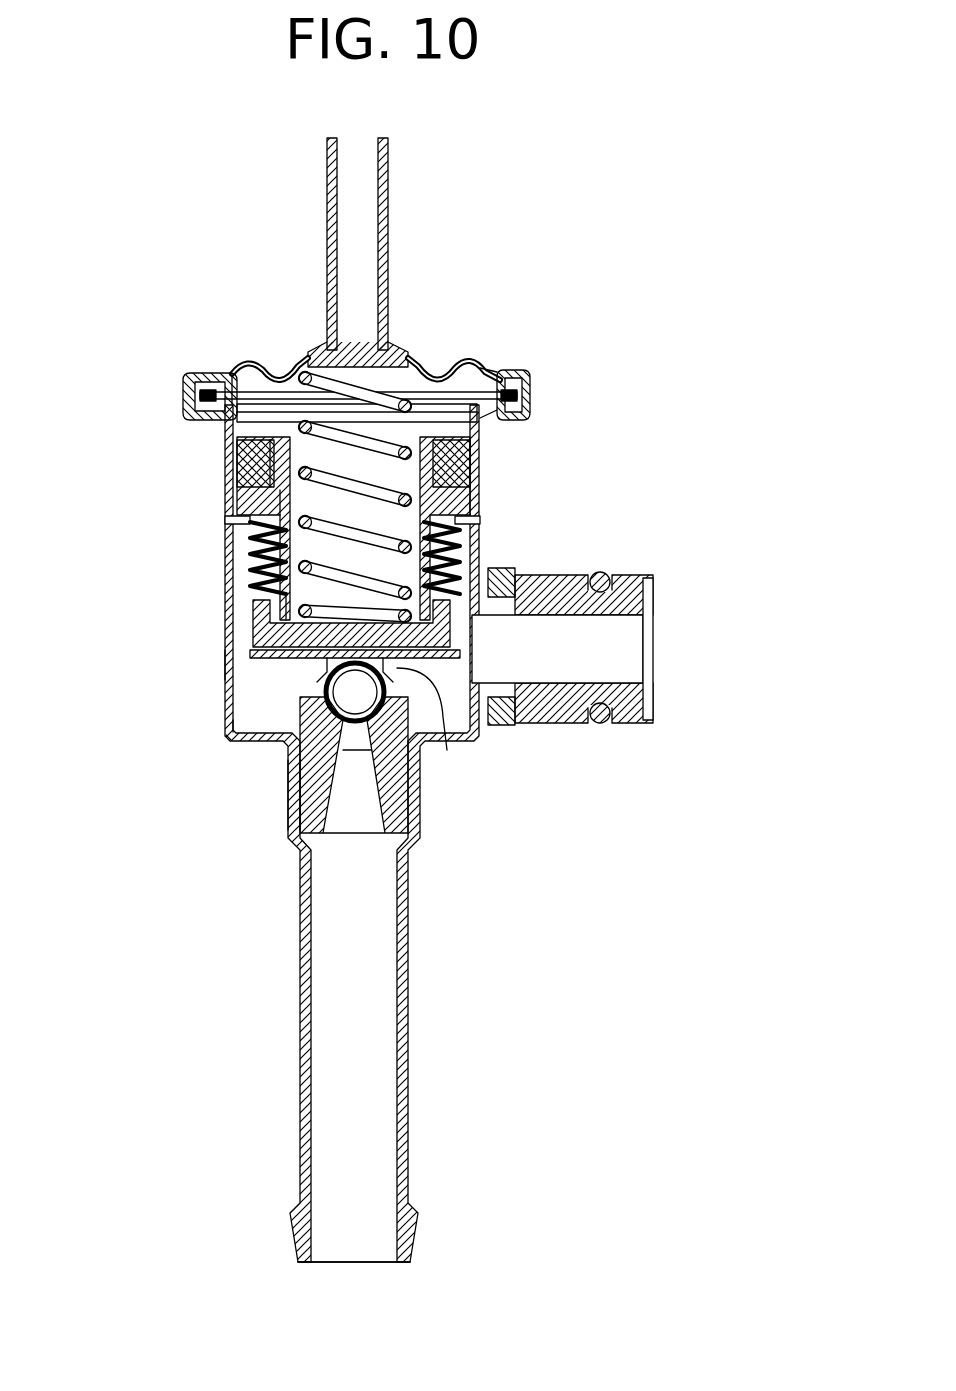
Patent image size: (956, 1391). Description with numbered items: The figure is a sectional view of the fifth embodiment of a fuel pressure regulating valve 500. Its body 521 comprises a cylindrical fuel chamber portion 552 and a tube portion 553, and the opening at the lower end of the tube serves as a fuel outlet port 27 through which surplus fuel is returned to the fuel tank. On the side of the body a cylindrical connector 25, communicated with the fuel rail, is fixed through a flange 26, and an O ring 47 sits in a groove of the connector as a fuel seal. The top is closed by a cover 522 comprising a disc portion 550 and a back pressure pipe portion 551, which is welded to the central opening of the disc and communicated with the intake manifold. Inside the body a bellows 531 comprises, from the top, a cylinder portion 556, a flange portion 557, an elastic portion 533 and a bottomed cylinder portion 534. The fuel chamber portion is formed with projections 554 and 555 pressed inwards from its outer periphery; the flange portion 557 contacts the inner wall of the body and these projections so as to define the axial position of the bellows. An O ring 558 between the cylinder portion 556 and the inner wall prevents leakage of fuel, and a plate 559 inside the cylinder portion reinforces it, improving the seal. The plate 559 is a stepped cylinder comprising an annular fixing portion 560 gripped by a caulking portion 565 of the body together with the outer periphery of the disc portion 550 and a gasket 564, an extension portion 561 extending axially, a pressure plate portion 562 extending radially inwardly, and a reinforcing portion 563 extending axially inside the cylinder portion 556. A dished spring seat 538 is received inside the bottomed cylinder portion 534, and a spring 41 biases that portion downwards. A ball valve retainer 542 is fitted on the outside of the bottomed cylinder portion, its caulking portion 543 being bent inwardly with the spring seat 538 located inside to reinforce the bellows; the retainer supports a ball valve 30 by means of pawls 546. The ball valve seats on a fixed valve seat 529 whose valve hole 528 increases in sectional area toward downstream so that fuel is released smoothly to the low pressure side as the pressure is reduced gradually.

The fuel pressure regulating valve 500 is at (185, 220).
The back pressure pipe portion 551 is at (390, 194).
The cover 522 is at (445, 335).
The gasket 564 is at (235, 366).
The spring 41 is at (417, 390).
The caulking portion 565 is at (185, 380).
The cylinder portion 556 is at (270, 438).
The disc portion 550 is at (478, 372).
The pressure plate portion 562 is at (522, 368).
The annular fixing portion 560 is at (520, 396).
The extension portion 561 is at (505, 422).
The reinforcing portion 563 is at (485, 480).
The plate 559 is at (618, 345).
The O ring 558 is at (240, 460).
The flange portion 557 is at (236, 510).
The projection 555 is at (240, 522).
The projection 554 is at (483, 520).
The O ring 47 is at (608, 570).
The elastic portion 533 is at (255, 548).
The bellows 531 is at (250, 598).
The caulking portion 543 is at (258, 632).
The spring seat 538 is at (224, 665).
The fuel chamber portion 552 is at (224, 708).
The ball valve retainer 542 is at (228, 746).
The bottomed cylinder portion 534 is at (252, 764).
The body 521 is at (288, 740).
The ball valve 30 is at (300, 798).
The pawls 546 is at (449, 752).
The fixed valve seat 529 is at (395, 818).
The valve hole 528 is at (355, 812).
The flange 26 is at (497, 720).
The connector 25 is at (577, 727).
The tube portion 553 is at (300, 1033).
The fuel outlet port 27 is at (355, 1264).